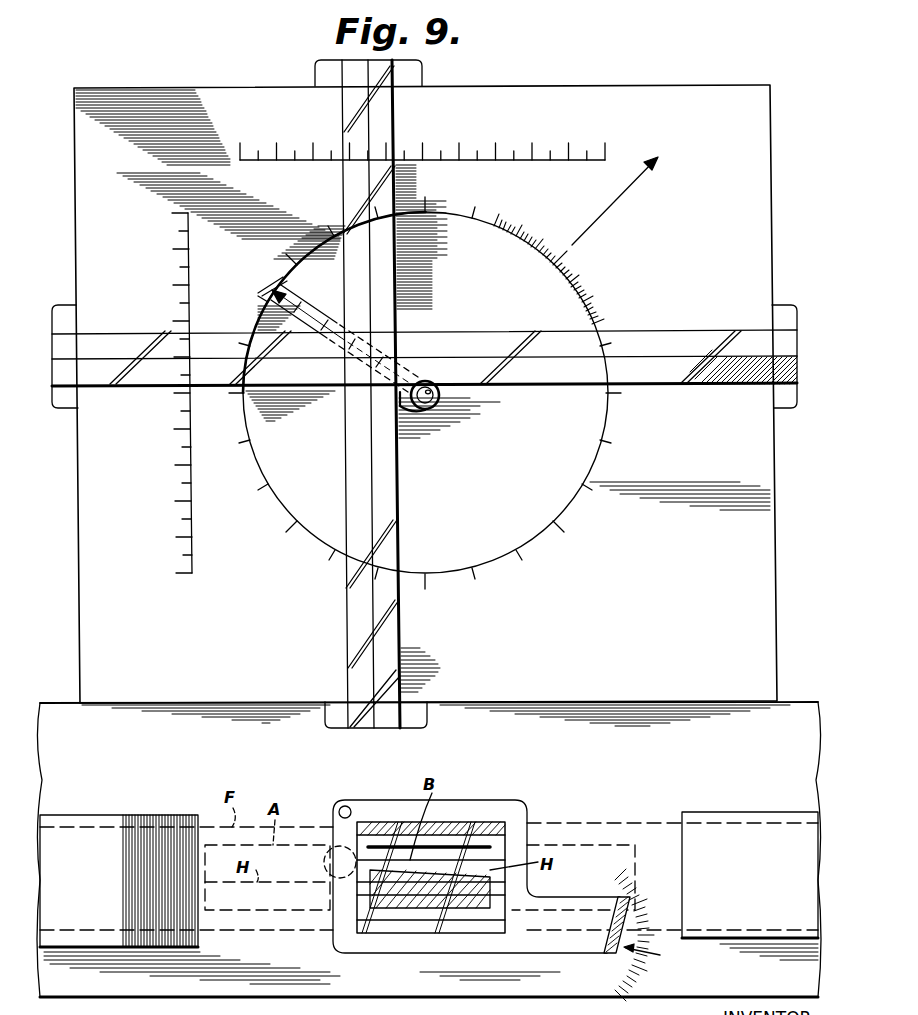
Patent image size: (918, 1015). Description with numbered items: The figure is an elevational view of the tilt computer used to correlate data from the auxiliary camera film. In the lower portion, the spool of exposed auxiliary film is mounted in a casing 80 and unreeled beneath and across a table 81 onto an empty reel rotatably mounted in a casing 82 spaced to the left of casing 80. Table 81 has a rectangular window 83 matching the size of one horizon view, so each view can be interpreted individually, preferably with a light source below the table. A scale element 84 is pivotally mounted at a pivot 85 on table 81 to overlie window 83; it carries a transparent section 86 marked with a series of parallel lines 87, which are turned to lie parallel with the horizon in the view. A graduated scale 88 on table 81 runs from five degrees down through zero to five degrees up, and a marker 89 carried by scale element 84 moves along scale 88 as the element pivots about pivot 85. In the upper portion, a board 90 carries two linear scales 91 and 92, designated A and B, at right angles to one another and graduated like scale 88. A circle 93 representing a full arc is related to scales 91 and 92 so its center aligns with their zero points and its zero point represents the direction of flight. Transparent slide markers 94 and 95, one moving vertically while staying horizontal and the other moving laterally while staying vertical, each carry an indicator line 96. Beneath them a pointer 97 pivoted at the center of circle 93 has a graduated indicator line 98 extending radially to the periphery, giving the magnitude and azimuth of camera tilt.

The casing 80 is at (755, 812).
The table 81 is at (378, 998).
The casing 82 is at (108, 815).
The rectangular window 83 is at (482, 847).
The scale element 84 is at (520, 812).
The pivot 85 is at (345, 805).
The transparent section 86 is at (457, 830).
The parallel lines 87 is at (410, 847).
The graduated scale 88 is at (654, 958).
The marker 89 is at (614, 905).
The board 90 is at (627, 86).
The linear scale 91 is at (196, 552).
The linear scale 92 is at (492, 165).
The circle 93 is at (604, 458).
The transparent slide marker 94 is at (693, 385).
The transparent slide marker 95 is at (397, 646).
The indicator line 96 is at (700, 355).
The pointer 97 is at (412, 412).
The indicator line 98 is at (330, 312).